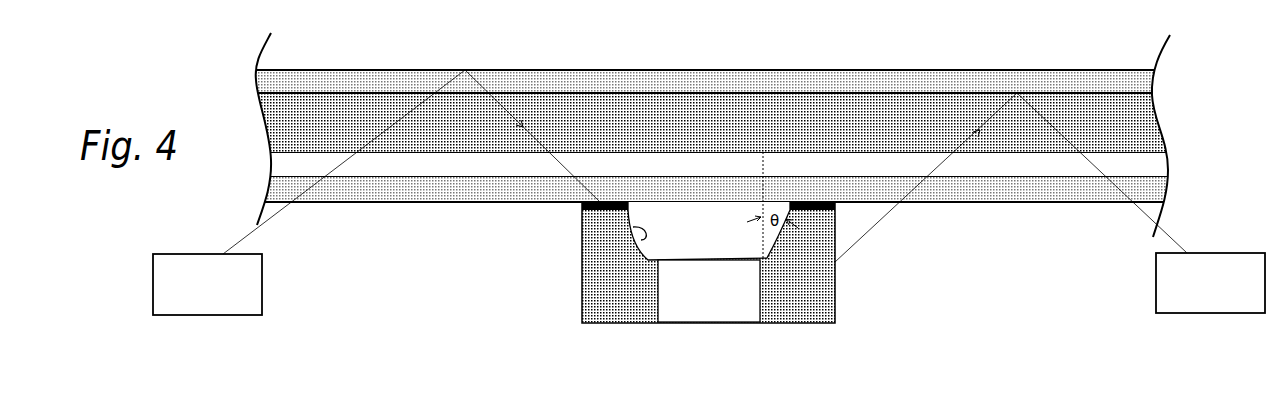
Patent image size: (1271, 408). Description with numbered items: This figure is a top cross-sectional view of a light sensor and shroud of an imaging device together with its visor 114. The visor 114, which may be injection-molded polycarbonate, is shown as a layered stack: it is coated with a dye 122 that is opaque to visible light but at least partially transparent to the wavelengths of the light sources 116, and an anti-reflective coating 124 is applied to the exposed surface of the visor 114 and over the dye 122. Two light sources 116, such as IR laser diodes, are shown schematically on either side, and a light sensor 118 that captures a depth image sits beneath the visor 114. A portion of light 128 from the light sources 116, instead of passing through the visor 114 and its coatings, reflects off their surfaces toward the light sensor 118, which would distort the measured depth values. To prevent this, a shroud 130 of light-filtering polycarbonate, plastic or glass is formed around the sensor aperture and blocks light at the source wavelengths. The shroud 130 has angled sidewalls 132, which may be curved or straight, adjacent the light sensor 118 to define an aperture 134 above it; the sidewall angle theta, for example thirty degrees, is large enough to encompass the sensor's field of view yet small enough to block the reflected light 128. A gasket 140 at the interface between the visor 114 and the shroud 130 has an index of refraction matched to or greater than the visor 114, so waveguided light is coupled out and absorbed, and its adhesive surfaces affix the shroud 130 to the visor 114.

The visor 114 is at (703, 118).
The light source 116 is at (221, 294).
The light sensor 118 is at (723, 301).
The dye 122 is at (815, 167).
The anti-reflective coating 124 is at (603, 83).
The reflected light 128 is at (482, 83).
The shroud 130 is at (597, 308).
The angled sidewall 132 is at (643, 235).
The aperture 134 is at (719, 231).
The gasket 140 is at (582, 208).